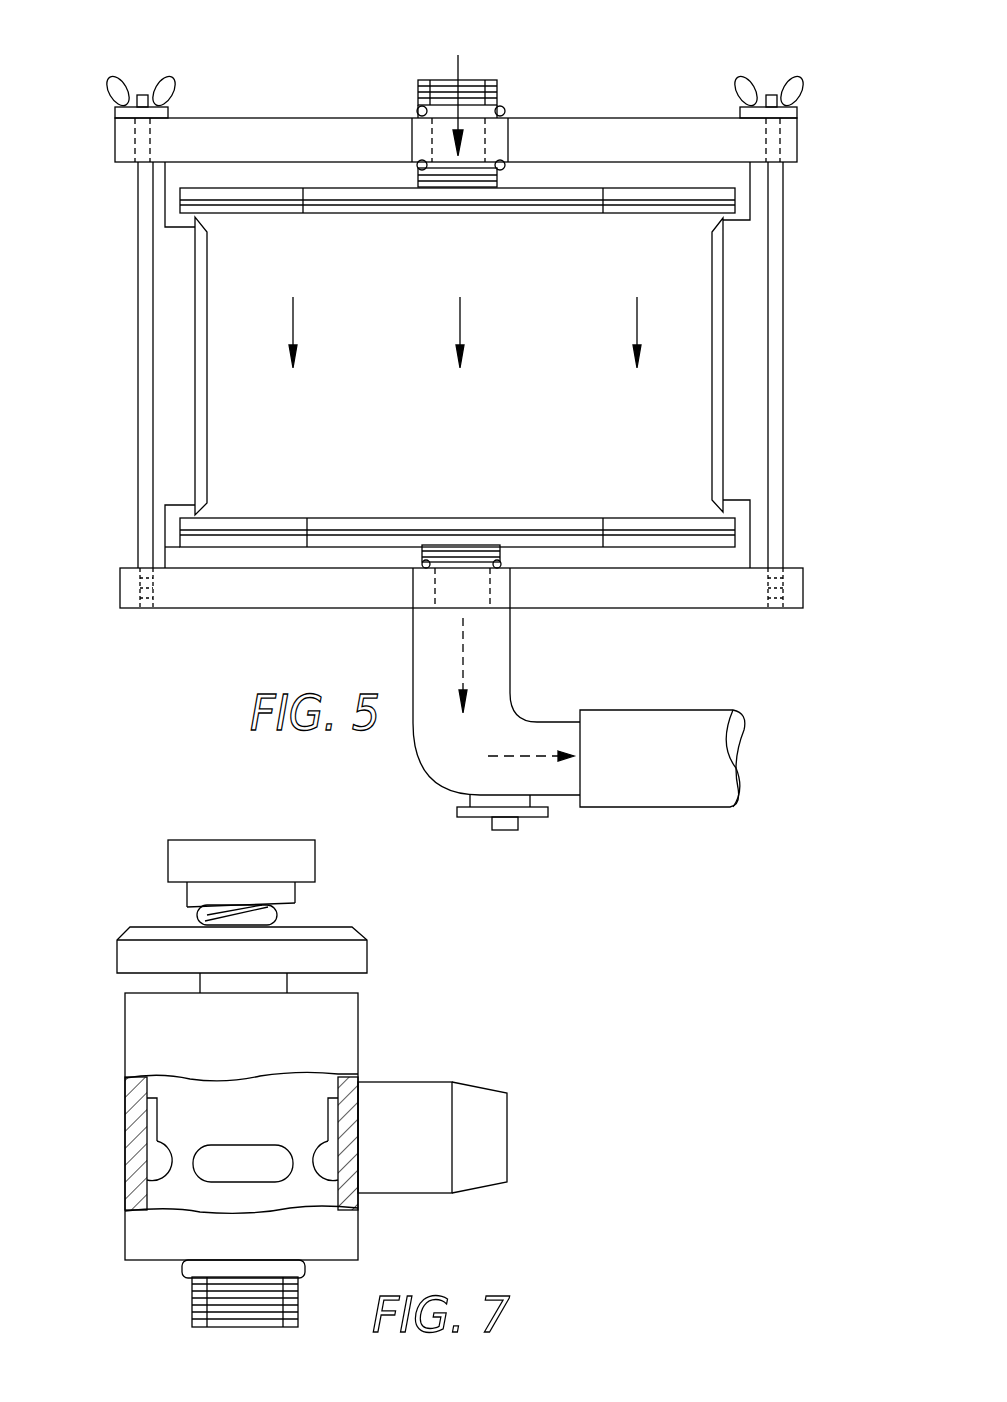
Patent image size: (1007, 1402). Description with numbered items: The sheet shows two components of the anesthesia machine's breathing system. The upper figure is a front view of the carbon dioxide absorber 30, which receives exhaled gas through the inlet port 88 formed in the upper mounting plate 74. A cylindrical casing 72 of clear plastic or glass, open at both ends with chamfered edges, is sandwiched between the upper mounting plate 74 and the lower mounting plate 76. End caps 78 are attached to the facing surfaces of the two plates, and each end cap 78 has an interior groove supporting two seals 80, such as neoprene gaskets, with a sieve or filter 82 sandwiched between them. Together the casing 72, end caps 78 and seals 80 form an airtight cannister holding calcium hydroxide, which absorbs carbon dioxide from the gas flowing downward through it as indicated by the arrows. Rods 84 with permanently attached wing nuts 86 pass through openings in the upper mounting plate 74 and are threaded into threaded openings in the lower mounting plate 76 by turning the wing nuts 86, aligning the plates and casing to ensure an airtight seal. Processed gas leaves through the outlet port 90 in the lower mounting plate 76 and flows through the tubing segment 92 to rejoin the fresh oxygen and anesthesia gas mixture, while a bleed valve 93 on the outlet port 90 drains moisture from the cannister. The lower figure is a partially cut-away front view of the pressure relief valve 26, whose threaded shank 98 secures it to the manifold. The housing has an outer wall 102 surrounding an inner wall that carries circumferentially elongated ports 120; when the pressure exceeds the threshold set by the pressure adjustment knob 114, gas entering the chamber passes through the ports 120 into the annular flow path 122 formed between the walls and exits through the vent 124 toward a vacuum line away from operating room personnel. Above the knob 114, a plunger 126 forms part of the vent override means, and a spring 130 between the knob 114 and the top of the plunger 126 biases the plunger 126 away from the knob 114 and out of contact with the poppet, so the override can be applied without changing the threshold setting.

In FIG. 5, the carbon dioxide absorber 30 is at (812, 303).
In FIG. 5, the cylindrical casing 72 is at (207, 285).
In FIG. 5, the upper mounting plate 74 is at (227, 118).
In FIG. 5, the lower mounting plate 76 is at (260, 610).
In FIG. 5, the end caps 78 is at (165, 198).
In FIG. 5, the seals 80 is at (633, 190).
In FIG. 5, the sieve or filter 82 is at (545, 200).
In FIG. 5, the rods 84 is at (138, 364).
In FIG. 5, the wing nuts 86 is at (142, 95).
In FIG. 5, the inlet port 88 is at (497, 90).
In FIG. 5, the outlet port 90 is at (512, 618).
In FIG. 5, the tubing segment 92 is at (652, 709).
In FIG. 5, the bleed valve 93 is at (457, 812).
In FIG. 7, the pressure relief valve 26 is at (358, 904).
In FIG. 7, the threaded shank 98 is at (300, 1296).
In FIG. 7, the outer wall 102 is at (127, 1093).
In FIG. 7, the pressure adjustment knob 114 is at (118, 952).
In FIG. 7, the circumferentially elongated ports 120 is at (163, 1160).
In FIG. 7, the annular flow path 122 is at (150, 1127).
In FIG. 7, the vent 124 is at (420, 1082).
In FIG. 7, the plunger 126 is at (247, 838).
In FIG. 7, the spring 130 is at (198, 918).